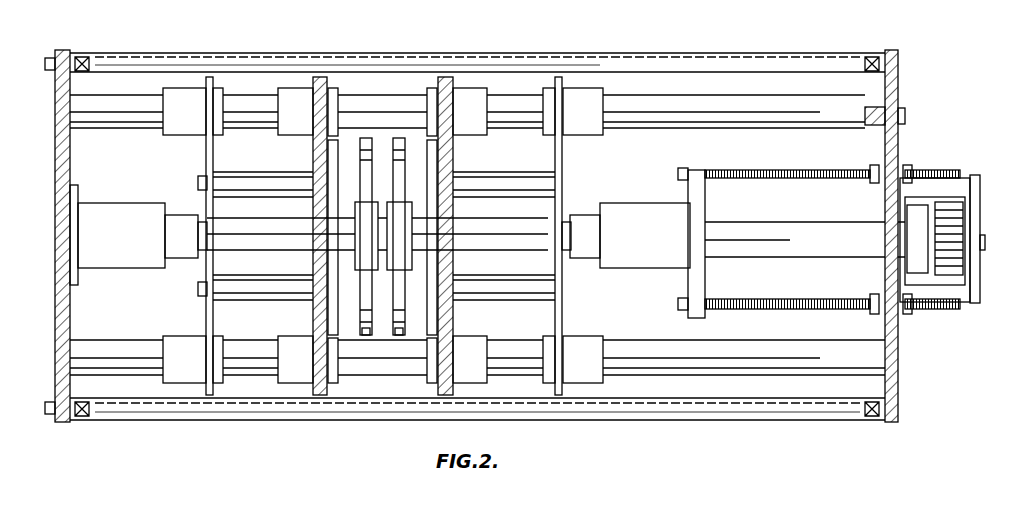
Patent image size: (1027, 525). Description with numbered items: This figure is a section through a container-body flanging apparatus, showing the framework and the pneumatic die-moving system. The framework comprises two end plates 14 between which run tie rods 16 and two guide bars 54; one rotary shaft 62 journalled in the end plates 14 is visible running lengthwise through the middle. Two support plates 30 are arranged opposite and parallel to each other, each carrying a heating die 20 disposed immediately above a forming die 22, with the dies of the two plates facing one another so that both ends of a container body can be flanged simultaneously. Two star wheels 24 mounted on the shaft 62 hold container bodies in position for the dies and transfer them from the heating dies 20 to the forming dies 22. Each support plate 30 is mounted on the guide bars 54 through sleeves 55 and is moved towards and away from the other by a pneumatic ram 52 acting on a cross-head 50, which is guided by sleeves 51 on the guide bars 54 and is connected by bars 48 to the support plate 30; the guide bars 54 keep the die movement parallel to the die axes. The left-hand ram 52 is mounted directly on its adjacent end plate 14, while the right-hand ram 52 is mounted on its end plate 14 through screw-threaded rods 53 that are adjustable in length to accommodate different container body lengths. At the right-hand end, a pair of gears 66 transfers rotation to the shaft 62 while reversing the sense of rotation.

The end plate 14 is at (55, 71).
The tie rod 16 is at (858, 60).
The heating die 20 is at (365, 140).
The forming die 22 is at (400, 336).
The star wheel 24 is at (400, 138).
The support plate 30 is at (320, 396).
The bar 48 is at (265, 180).
The cross-head 50 is at (212, 85).
The sleeve 51 is at (590, 95).
The pneumatic ram 52 is at (120, 203).
The screw-threaded rod 53 is at (898, 332).
The guide bar 54 is at (690, 105).
The sleeve 55 is at (292, 88).
The rotary shaft 62 is at (430, 242).
The gear 66 is at (962, 240).